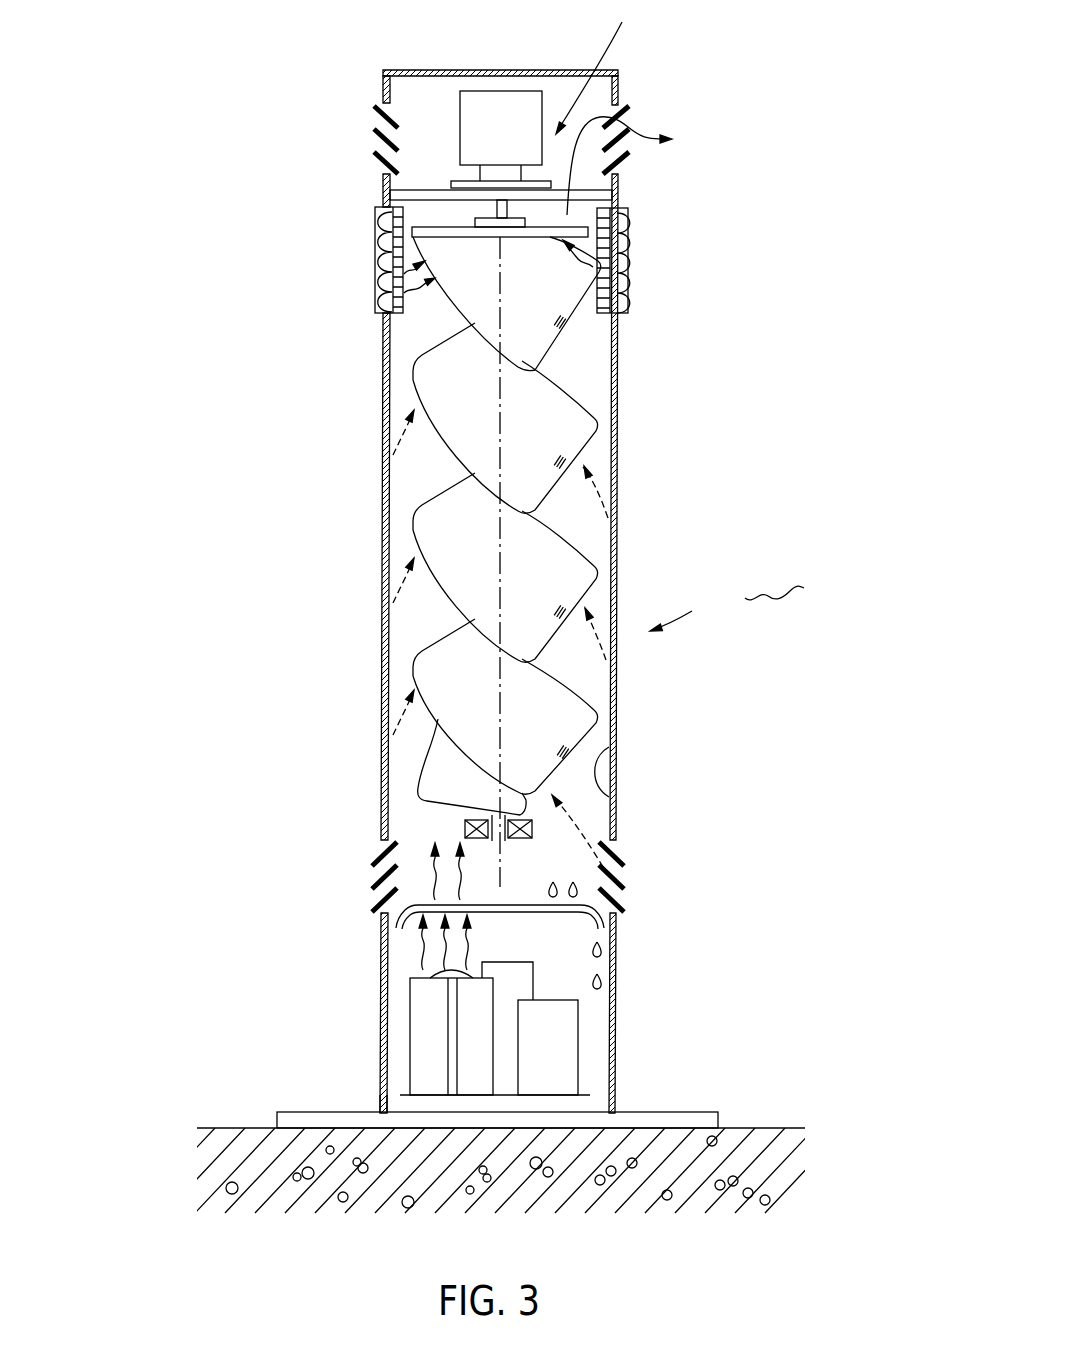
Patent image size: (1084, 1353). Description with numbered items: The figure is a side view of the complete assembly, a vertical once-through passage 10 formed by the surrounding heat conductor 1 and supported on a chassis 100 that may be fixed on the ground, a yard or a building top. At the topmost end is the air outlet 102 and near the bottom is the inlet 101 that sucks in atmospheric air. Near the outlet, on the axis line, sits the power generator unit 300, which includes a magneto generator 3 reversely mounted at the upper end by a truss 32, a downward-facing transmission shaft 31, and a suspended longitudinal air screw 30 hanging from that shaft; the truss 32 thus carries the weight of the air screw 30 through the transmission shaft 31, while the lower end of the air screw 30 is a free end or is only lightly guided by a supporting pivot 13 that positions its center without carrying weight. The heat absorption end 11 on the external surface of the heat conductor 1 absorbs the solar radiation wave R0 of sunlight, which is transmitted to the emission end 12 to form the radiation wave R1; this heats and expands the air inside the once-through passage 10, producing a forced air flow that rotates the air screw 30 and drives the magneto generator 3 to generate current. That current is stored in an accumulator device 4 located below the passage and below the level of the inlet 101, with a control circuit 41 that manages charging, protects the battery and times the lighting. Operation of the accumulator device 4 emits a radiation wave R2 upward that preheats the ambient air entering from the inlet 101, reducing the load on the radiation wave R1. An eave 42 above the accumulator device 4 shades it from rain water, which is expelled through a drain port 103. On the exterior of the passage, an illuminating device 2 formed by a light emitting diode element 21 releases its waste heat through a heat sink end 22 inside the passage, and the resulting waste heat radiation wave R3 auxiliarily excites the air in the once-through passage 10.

The heat conductor 1 is at (383, 547).
The illuminating device 2 is at (664, 226).
The magneto generator 3 is at (501, 108).
The accumulator device 4 is at (435, 1028).
The once-through passage 10 is at (500, 527).
The heat absorption end 11 is at (616, 720).
The emission end 12 is at (613, 797).
The supporting pivot 13 is at (466, 828).
The light emitting diode element 21 is at (622, 243).
The heat sink end 22 is at (613, 283).
The air screw 30 is at (558, 437).
The transmission shaft 31 is at (498, 210).
The truss 32 is at (418, 196).
The control circuit 41 is at (562, 1055).
The eave 42 is at (425, 907).
The chassis 100 is at (692, 1118).
The inlet 101 is at (622, 900).
The air outlet 102 is at (546, 160).
The drain port 103 is at (380, 1103).
The power generator unit 300 is at (612, 69).
The solar radiation wave R0 is at (727, 604).
The radiation wave R1 is at (580, 666).
The radiation wave R2 is at (418, 948).
The waste heat radiation wave R3 is at (423, 297).